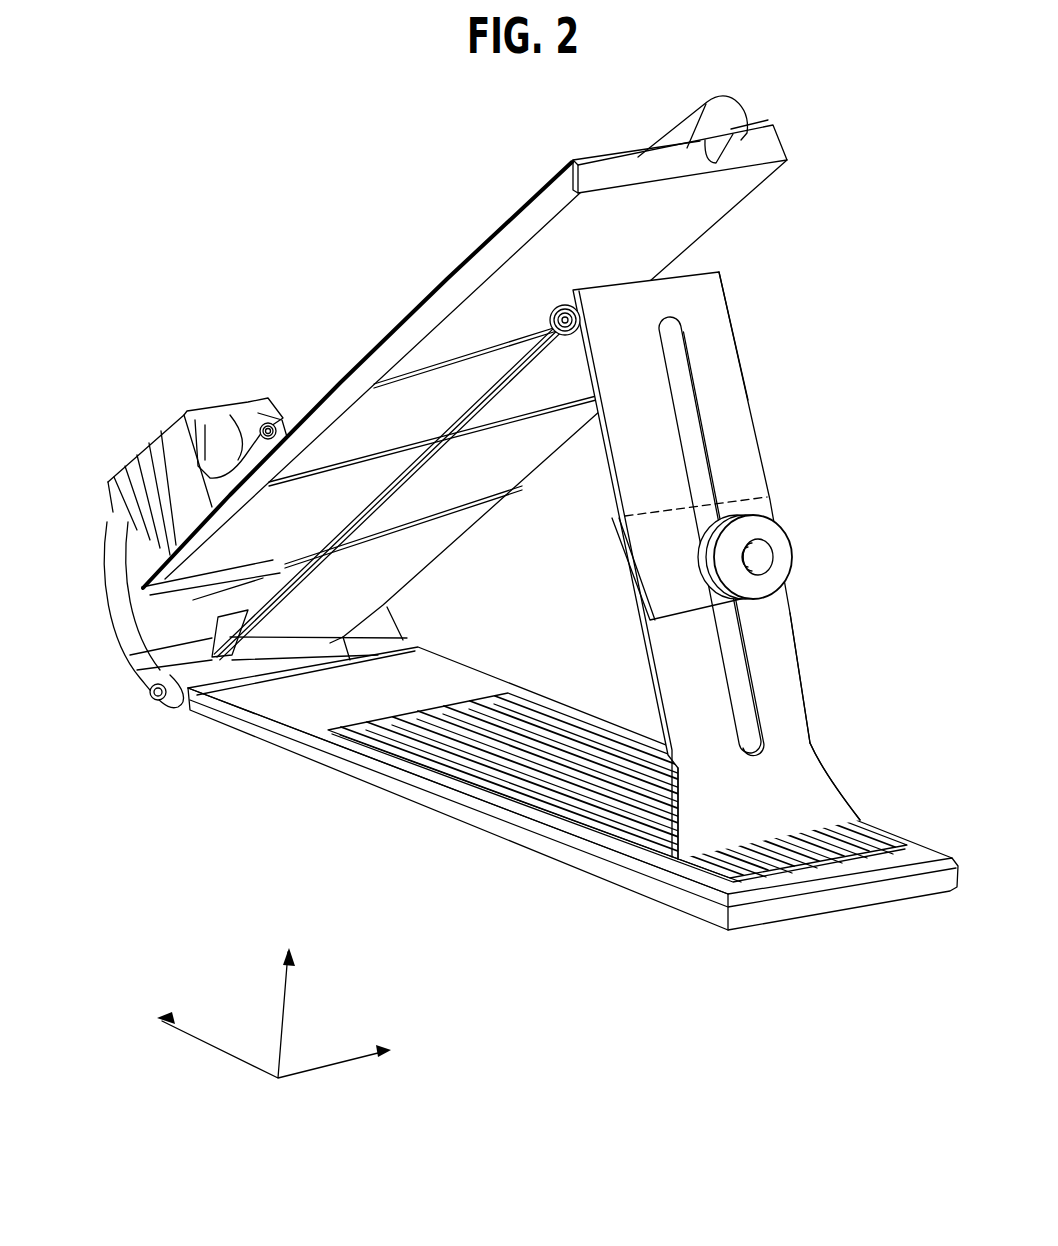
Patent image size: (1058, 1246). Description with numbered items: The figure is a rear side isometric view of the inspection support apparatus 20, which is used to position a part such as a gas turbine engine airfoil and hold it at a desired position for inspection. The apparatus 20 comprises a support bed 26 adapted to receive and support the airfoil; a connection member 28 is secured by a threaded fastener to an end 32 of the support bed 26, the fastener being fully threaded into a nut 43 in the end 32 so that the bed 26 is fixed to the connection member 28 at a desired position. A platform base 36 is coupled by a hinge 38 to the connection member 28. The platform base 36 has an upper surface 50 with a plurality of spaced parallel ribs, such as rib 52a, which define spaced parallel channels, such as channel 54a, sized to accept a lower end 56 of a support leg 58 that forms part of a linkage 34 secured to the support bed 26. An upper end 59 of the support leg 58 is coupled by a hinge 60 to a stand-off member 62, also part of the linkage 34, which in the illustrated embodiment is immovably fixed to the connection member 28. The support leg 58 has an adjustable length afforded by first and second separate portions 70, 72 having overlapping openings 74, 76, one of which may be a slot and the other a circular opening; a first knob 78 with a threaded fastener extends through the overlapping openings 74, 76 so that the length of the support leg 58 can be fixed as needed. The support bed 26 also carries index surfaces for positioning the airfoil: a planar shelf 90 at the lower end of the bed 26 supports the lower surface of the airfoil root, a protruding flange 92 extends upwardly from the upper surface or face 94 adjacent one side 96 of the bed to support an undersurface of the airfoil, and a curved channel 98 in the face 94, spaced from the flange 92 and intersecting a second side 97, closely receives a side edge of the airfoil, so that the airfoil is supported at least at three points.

The inspection support apparatus 20 is at (305, 178).
The support bed 26 is at (380, 337).
The connection member 28 is at (113, 603).
The end of the support bed 32 is at (157, 477).
The linkage 34 is at (750, 240).
The platform base 36 is at (400, 797).
The hinge 38 is at (155, 700).
The nut 43 is at (266, 412).
The upper surface 50 is at (283, 705).
The rib 52a is at (512, 697).
The channel 54a is at (345, 742).
The lower end of the support leg 56 is at (826, 789).
The support leg 58 is at (807, 280).
The upper end of the support leg 59 is at (703, 328).
The hinge 60 is at (577, 319).
The stand-off member 62 is at (212, 637).
The first portion of the support leg 70 is at (742, 376).
The second portion of the support leg 72 is at (810, 716).
The opening 74 is at (700, 458).
The opening 76 is at (750, 690).
The first knob 78 is at (782, 577).
The shelf 90 is at (255, 406).
The protruding flange 92 is at (728, 110).
The upper surface or face 94 is at (430, 290).
The side of the bed 96 is at (745, 204).
The second side of the bed 97 is at (352, 372).
The curved channel 98 is at (737, 142).